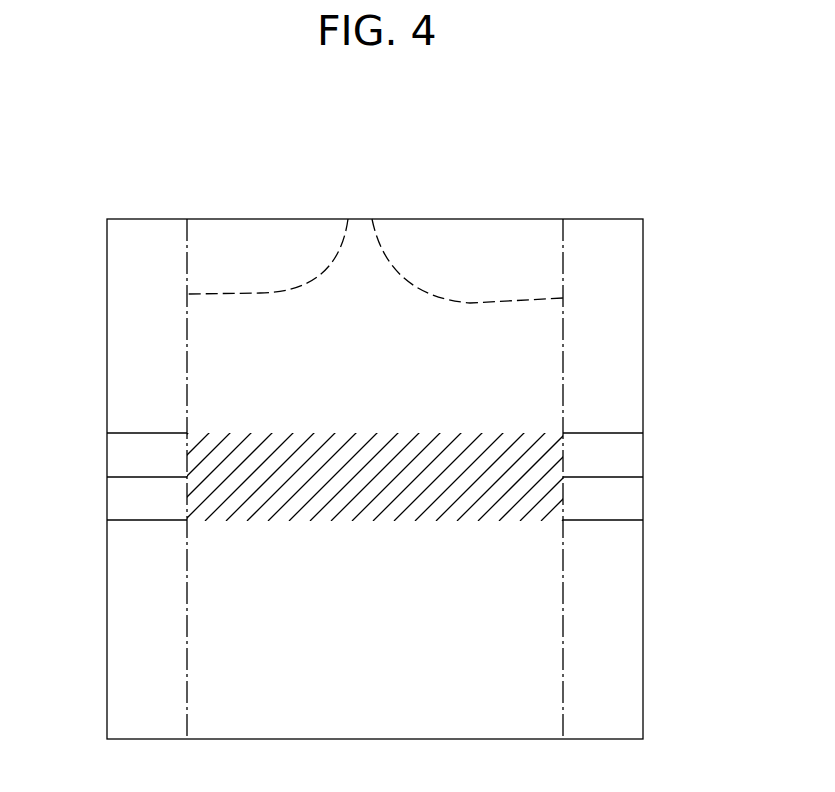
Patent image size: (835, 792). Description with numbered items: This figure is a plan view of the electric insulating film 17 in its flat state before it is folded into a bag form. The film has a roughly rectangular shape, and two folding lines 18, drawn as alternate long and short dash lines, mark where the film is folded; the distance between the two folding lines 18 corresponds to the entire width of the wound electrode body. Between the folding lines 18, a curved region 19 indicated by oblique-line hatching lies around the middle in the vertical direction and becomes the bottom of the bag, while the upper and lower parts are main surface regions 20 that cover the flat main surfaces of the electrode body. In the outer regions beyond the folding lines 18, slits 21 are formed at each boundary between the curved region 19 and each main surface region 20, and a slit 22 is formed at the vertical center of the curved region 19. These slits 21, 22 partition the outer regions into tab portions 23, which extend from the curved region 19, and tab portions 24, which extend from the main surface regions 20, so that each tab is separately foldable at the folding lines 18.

The electric insulating film 17 is at (569, 170).
The folding line 18 is at (348, 219).
The curved region 19 is at (488, 440).
The main surface region 20 is at (345, 376).
The slit 21 is at (142, 434).
The slit 22 is at (145, 477).
The tab portion (bottom folded portion) 23 is at (122, 450).
The tab portion (lateral folded portion) 24 is at (113, 333).